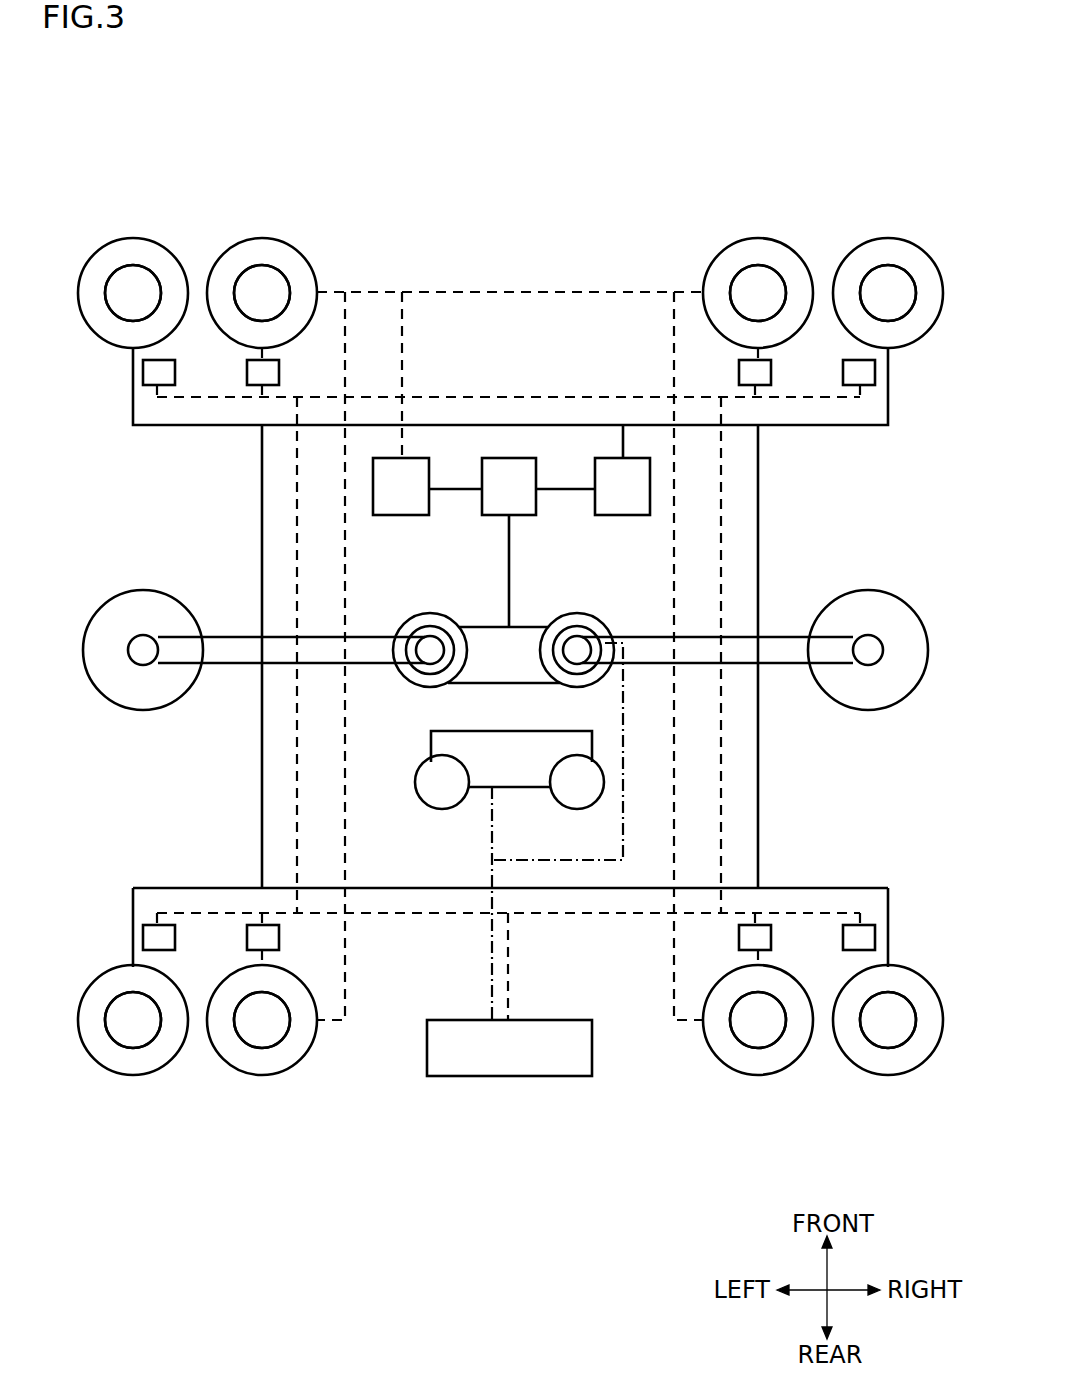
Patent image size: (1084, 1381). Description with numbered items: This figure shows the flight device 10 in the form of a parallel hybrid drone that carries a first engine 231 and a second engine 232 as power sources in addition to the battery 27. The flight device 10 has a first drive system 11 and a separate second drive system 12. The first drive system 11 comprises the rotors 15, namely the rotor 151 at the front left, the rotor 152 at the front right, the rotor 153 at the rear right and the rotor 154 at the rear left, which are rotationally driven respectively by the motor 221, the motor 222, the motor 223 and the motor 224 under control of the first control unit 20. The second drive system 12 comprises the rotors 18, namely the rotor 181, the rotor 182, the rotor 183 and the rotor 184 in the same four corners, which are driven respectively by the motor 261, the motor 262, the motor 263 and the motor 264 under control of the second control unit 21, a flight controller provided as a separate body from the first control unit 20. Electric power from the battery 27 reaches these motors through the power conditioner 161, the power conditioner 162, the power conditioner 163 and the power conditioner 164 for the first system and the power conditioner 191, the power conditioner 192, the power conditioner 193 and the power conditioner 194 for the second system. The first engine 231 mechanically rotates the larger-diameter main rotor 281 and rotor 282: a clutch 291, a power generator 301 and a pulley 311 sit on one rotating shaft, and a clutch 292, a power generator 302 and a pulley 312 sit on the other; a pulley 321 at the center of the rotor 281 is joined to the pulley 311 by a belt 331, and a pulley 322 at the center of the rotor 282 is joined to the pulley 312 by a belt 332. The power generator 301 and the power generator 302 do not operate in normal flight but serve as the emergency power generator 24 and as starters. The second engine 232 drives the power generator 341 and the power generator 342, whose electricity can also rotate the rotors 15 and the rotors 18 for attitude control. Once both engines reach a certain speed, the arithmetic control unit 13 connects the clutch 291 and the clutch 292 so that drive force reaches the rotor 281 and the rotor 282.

The flight device 10 is at (480, 158).
The first drive system 11 is at (485, 292).
The second drive system 12 is at (540, 425).
The arithmetic control unit 13 is at (485, 515).
The rotors 15 is at (277, 178).
The rotors 18 is at (157, 178).
The first control unit 20 is at (402, 515).
The second control unit 21 is at (620, 515).
The emergency power generator 24 is at (536, 629).
The battery 27 is at (500, 1076).
The rotor 151 is at (262, 238).
The rotor 152 is at (755, 238).
The rotor 153 is at (780, 1073).
The rotor 154 is at (285, 1073).
The power conditioner 161 is at (279, 372).
The power conditioner 162 is at (739, 372).
The power conditioner 163 is at (739, 937).
The power conditioner 164 is at (279, 937).
The rotor 181 is at (133, 238).
The rotor 182 is at (885, 238).
The rotor 183 is at (905, 1073).
The rotor 184 is at (158, 1073).
The power conditioner 191 is at (143, 372).
The power conditioner 192 is at (875, 372).
The power conditioner 193 is at (875, 937).
The power conditioner 194 is at (143, 937).
The motor 221 is at (285, 267).
The motor 222 is at (782, 267).
The motor 223 is at (762, 1046).
The motor 224 is at (265, 1046).
The first engine 231 is at (504, 655).
The second engine 232 is at (511, 759).
The motor 261 is at (155, 267).
The motor 262 is at (908, 267).
The motor 263 is at (885, 1046).
The motor 264 is at (143, 1046).
The rotor 281 is at (130, 592).
The rotor 282 is at (866, 592).
The clutch 291 is at (405, 631).
The clutch 292 is at (560, 631).
The power generator 301 is at (440, 630).
The power generator 302 is at (597, 630).
The pulley 311 is at (433, 664).
The pulley 312 is at (572, 664).
The pulley 321 is at (145, 666).
The pulley 322 is at (868, 666).
The belt 331 is at (232, 665).
The belt 332 is at (797, 665).
The power generator 341 is at (440, 810).
The power generator 342 is at (577, 810).